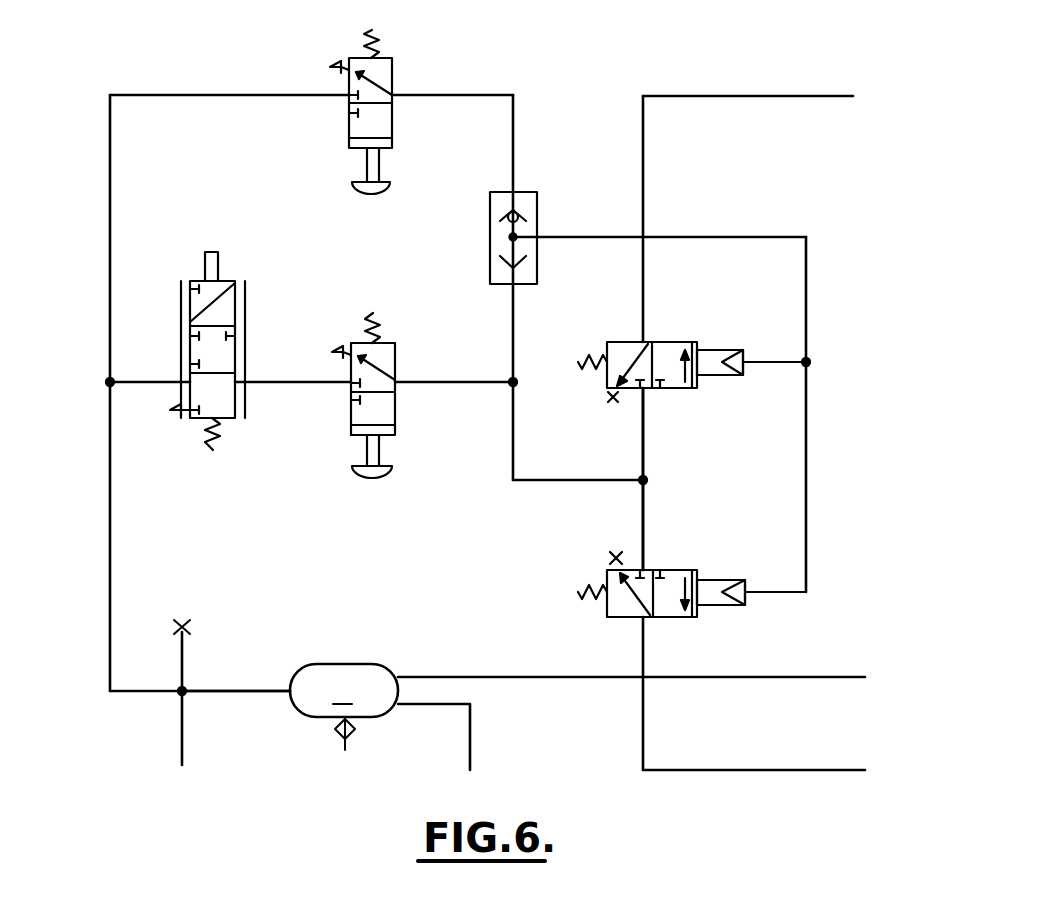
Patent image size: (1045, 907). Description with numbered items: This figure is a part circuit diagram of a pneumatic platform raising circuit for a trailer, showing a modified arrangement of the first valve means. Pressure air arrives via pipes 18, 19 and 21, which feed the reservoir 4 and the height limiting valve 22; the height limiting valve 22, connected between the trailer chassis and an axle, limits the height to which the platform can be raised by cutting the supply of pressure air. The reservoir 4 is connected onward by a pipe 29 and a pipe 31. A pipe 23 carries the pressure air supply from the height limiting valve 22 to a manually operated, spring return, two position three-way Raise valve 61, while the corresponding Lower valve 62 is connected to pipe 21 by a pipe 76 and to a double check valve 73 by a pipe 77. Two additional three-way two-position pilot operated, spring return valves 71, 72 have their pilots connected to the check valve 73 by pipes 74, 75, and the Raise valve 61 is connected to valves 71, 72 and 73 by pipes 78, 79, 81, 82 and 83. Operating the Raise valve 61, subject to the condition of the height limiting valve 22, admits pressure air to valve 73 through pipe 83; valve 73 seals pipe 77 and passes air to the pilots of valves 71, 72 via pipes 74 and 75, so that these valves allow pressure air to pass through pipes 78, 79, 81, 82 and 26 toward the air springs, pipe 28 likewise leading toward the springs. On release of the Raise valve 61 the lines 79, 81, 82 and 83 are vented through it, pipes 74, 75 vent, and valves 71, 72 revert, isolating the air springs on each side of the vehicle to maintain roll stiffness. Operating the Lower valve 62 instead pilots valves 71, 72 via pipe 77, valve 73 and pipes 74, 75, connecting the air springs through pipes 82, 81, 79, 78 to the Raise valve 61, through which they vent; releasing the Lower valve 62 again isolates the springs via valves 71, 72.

The reservoir 4 is at (344, 707).
The pipe 18 is at (183, 741).
The pipe 19 is at (225, 691).
The pipe 21 is at (110, 522).
The height limiting valve 22 is at (237, 269).
The pipe 23 is at (276, 382).
The pipe 26 is at (750, 770).
The pipe 28 is at (725, 96).
The pipe 29 is at (470, 745).
The pipe 31 is at (480, 677).
The Raise valve 61 is at (358, 438).
The Lower valve 62 is at (400, 69).
The pilot operated valve 71 is at (706, 341).
The pilot operated valve 72 is at (713, 571).
The double check valve 73 is at (541, 202).
The pipe 74 is at (712, 237).
The pipe 75 is at (806, 463).
The pipe 76 is at (110, 218).
The pipe 77 is at (518, 127).
The pipe 78 is at (440, 382).
The pipe 79 is at (570, 480).
The pipe 81 is at (643, 450).
The pipe 82 is at (643, 527).
The pipe 83 is at (513, 329).